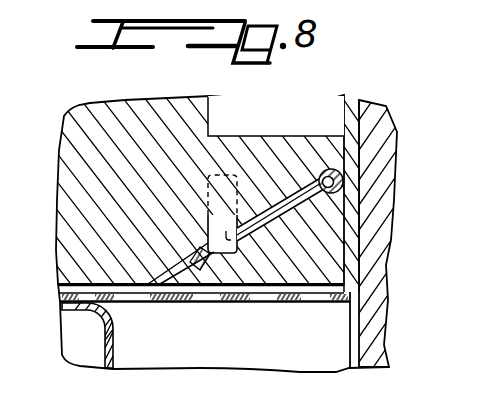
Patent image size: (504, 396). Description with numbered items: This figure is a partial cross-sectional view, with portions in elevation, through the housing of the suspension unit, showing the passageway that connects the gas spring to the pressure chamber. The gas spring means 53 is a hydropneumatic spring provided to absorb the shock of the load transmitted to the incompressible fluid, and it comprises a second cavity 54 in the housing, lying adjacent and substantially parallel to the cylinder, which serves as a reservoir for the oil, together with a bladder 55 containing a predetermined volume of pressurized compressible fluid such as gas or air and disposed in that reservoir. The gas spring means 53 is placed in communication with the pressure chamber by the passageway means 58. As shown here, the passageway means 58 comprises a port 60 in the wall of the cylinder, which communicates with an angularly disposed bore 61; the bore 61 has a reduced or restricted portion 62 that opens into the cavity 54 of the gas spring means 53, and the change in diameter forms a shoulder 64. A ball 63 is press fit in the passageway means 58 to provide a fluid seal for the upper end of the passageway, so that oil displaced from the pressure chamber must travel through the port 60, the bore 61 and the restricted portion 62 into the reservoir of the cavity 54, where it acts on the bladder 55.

The gas spring means 53 is at (84, 334).
The second cavity 54 is at (0, 78).
The bladder 55 is at (113, 347).
The passageway means 58 is at (291, 215).
The port 60 is at (258, 214).
The angularly disposed bore 61 is at (299, 209).
The restricted portion 62 is at (165, 296).
The ball 63 is at (341, 176).
The shoulder 64 is at (226, 231).